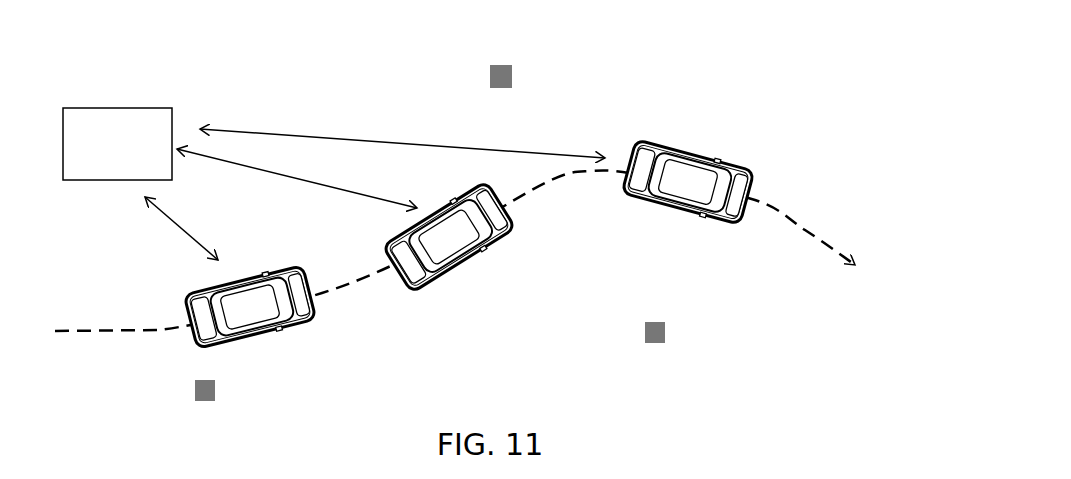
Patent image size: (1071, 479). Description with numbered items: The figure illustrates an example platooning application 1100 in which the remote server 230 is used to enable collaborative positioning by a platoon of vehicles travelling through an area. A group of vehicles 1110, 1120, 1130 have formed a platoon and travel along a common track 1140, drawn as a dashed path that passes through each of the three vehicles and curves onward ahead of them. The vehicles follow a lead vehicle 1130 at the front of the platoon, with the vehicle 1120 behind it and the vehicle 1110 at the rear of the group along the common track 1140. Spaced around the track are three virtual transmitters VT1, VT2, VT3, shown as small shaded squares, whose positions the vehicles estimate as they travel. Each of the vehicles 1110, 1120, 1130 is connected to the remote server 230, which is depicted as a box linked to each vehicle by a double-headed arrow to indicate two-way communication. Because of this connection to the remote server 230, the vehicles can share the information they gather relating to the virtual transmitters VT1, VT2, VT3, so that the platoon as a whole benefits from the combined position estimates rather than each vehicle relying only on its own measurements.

The platooning application 1100 is at (840, 95).
The remote server 230 is at (334, 184).
The vehicle 1110 is at (263, 315).
The vehicle 1120 is at (455, 245).
The lead vehicle 1130 is at (688, 193).
The common track 1140 is at (110, 330).
The virtual transmitter VT1 is at (224, 404).
The virtual transmitter VT2 is at (519, 89).
The virtual transmitter VT3 is at (675, 346).